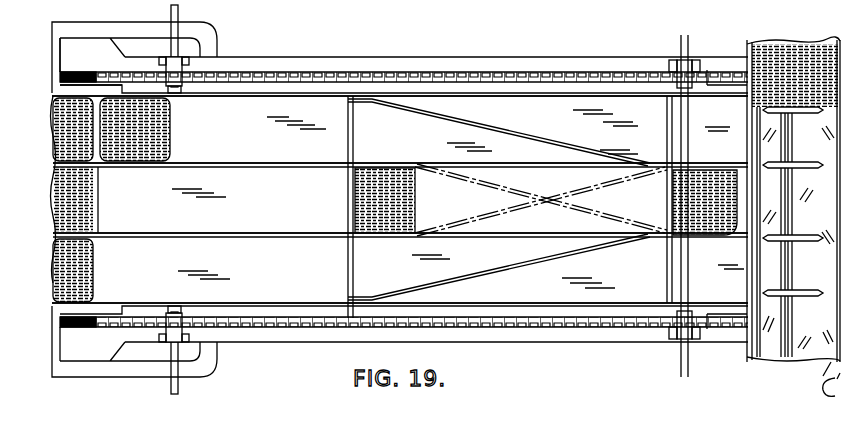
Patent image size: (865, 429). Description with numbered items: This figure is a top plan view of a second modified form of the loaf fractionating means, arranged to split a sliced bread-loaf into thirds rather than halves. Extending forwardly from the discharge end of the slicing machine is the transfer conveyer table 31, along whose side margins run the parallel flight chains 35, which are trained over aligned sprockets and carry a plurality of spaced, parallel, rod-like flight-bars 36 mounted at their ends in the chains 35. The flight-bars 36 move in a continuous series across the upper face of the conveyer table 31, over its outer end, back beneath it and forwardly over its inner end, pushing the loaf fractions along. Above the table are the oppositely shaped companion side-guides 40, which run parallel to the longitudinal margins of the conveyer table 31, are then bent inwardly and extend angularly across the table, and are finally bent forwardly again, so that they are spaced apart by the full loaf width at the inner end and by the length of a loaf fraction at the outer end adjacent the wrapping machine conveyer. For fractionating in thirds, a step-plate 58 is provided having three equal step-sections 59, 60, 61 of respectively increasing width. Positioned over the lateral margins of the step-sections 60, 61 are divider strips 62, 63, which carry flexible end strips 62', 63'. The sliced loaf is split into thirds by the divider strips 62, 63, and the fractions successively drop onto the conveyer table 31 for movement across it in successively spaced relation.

The transfer conveyer table 31 is at (561, 110).
The flight chains 35 is at (619, 72).
The flight-bars 36 is at (671, 277).
The side-guides 40 is at (428, 115).
The step-plate 58 is at (94, 91).
The step-section 59 is at (62, 270).
The step-section 60 is at (103, 196).
The step-section 61 is at (173, 119).
The divider strip 62 is at (400, 223).
The divider strip 63 is at (400, 152).
The flexible end strip 62' is at (541, 200).
The flexible end strip 63' is at (541, 201).